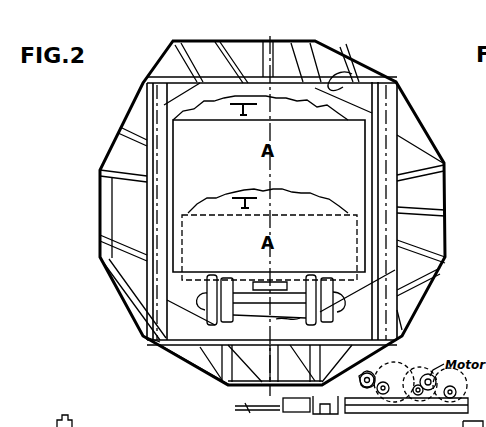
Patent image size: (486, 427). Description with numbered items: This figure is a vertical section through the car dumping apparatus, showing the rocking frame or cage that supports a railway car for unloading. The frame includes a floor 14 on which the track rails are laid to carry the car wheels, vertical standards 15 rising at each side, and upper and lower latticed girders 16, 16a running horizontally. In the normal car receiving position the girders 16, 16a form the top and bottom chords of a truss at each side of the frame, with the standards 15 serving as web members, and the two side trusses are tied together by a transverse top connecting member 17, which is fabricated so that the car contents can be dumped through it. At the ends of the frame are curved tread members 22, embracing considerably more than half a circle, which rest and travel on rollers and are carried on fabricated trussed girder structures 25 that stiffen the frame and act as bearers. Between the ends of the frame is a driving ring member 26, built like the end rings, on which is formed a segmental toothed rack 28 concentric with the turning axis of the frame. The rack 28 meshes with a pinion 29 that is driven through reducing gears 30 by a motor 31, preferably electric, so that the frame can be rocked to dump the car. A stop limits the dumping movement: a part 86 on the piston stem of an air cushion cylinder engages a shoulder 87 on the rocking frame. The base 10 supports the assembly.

The base 10 is at (372, 413).
The floor 14 is at (229, 328).
The vertical standards 15 is at (158, 172).
The upper latticed girder 16 is at (400, 82).
The lower latticed girder 16a is at (140, 340).
The transverse top connecting member 17 is at (343, 87).
The curved tread member 22 is at (472, 122).
The trussed girder structure 25 is at (485, 193).
The driving ring member 26 is at (120, 193).
The segmental toothed gear or rack 28 is at (103, 288).
The pinion 29 is at (385, 360).
The reducing gears 30 is at (404, 378).
The motor 31 is at (423, 413).
The piston stem part 86 is at (242, 408).
The shoulder 87 is at (180, 49).